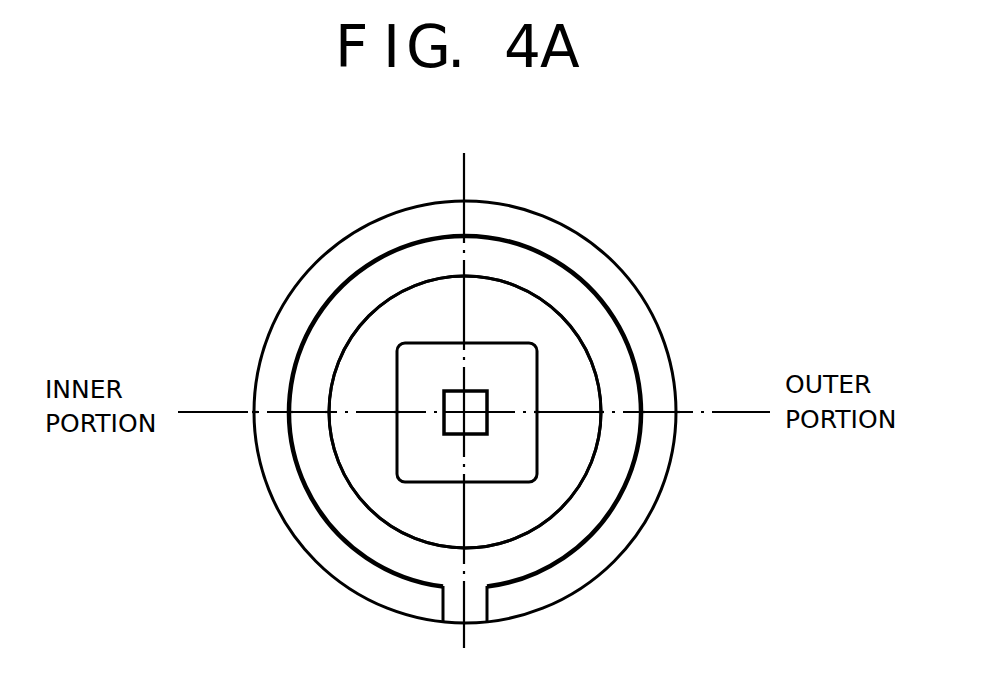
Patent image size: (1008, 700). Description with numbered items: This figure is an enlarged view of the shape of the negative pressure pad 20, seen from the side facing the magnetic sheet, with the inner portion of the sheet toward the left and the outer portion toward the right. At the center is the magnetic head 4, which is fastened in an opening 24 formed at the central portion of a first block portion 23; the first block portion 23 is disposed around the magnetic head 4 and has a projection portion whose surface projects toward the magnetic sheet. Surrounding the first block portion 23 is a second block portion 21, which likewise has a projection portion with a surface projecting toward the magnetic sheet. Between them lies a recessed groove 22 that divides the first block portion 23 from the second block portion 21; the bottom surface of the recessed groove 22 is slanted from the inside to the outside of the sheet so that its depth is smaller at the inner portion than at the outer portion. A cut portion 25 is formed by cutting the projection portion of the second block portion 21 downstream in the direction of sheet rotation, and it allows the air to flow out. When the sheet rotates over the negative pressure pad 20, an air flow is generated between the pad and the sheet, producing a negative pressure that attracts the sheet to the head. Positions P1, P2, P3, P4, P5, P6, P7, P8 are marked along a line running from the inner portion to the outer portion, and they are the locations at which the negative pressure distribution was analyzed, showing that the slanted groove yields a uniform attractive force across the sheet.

The magnetic head 4 is at (460, 425).
The negative pressure pad 20 is at (595, 243).
The second block portion 21 is at (627, 290).
The recessed groove 22 is at (615, 337).
The first block portion 23 is at (502, 295).
The opening 24 is at (427, 362).
The cut portion 25 is at (458, 615).
The position P1 is at (255, 413).
The position P2 is at (290, 413).
The position P3 is at (328, 413).
The position P4 is at (397, 413).
The position P5 is at (538, 412).
The position P6 is at (600, 413).
The position P7 is at (643, 411).
The position P8 is at (678, 415).